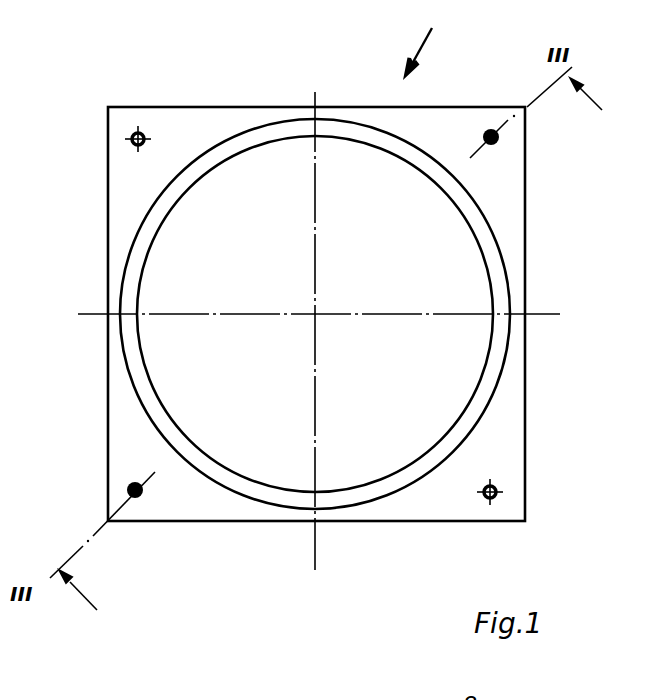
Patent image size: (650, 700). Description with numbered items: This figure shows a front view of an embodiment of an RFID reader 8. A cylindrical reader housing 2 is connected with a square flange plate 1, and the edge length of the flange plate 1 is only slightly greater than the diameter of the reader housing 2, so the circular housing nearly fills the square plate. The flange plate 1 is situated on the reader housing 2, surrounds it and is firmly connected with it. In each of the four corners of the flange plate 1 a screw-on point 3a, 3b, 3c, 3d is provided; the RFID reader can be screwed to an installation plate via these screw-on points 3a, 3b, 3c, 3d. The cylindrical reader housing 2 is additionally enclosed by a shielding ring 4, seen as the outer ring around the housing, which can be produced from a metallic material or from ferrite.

The flange plate 1 is at (505, 185).
The reader housing 2 is at (467, 340).
The screw-on point 3a is at (502, 146).
The screw-on point 3b is at (498, 482).
The screw-on point 3c is at (127, 483).
The screw-on point 3d is at (147, 131).
The shielding ring 4 is at (133, 268).
The RFID reader 8 is at (425, 41).